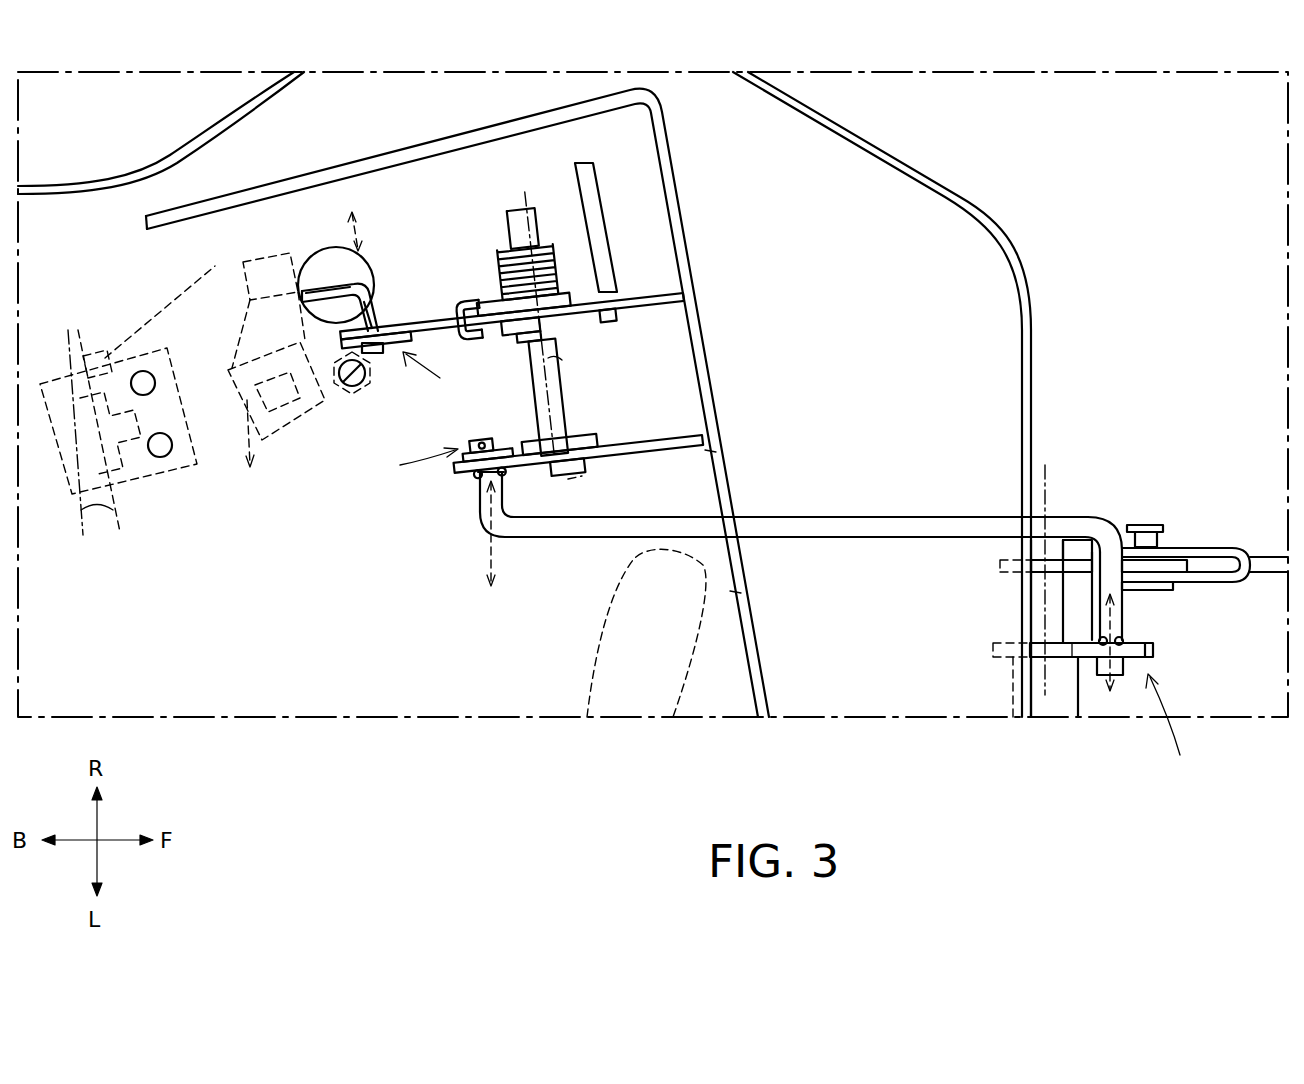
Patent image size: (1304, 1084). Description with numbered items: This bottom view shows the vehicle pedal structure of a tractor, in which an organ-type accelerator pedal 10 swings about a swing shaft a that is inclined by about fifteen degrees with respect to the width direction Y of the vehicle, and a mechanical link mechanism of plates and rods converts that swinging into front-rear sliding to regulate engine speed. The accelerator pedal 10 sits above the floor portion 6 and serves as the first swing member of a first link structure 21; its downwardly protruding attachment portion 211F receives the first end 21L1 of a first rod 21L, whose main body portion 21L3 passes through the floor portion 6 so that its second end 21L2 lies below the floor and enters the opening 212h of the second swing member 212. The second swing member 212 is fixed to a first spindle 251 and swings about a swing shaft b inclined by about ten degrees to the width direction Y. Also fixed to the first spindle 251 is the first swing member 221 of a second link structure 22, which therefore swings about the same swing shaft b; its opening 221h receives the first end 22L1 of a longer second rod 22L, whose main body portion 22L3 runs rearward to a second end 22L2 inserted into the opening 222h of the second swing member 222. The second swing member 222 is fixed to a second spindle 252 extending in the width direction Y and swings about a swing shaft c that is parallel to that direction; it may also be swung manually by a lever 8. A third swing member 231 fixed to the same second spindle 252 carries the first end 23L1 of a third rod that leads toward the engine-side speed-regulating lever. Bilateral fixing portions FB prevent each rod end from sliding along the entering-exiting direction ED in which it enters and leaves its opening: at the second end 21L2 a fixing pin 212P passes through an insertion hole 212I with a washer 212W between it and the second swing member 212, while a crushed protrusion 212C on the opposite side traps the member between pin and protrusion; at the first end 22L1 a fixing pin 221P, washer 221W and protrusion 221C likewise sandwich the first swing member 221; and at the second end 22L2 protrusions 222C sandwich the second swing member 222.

The floor portion 6 is at (945, 184).
The first link structure 21 is at (460, 212).
The first rod 21L is at (345, 280).
The first end 21L1 is at (302, 293).
The second end 21L2 is at (380, 300).
The main body portion 21L3 is at (316, 252).
The entering-exiting direction ED is at (1108, 590).
The second swing member 212 is at (448, 318).
The opening 212h is at (462, 298).
The first spindle 251 is at (562, 392).
The washer 212W is at (338, 338).
The insertion hole 212I is at (382, 356).
The protrusion 212C is at (378, 352).
The fixing pin 212P is at (352, 387).
The first swing member 221 is at (596, 448).
The fixing pin 221P is at (482, 444).
The opening 221h is at (504, 473).
The washer 221W is at (458, 466).
The protrusion 221C is at (480, 476).
The swing shaft b is at (578, 480).
The second link structure 22 is at (882, 484).
The second rod 22L is at (833, 540).
The first end 22L1 is at (484, 490).
The second end 22L2 is at (1124, 610).
The main body portion 22L3 is at (590, 540).
The second spindle 252 is at (1040, 607).
The second swing member 222 is at (1152, 652).
The protrusion 222C is at (1120, 660).
The opening 222h is at (1090, 640).
The third swing member 231 is at (1162, 526).
The first end 23L1 is at (1272, 556).
The swing shaft c is at (1056, 572).
The lever 8 is at (598, 660).
The accelerator pedal 10 is at (186, 303).
The attachment portion 211F is at (256, 432).
The width direction Y is at (78, 530).
The swing shaft a is at (122, 526).
The bilateral fixing portions FB is at (777, 564).